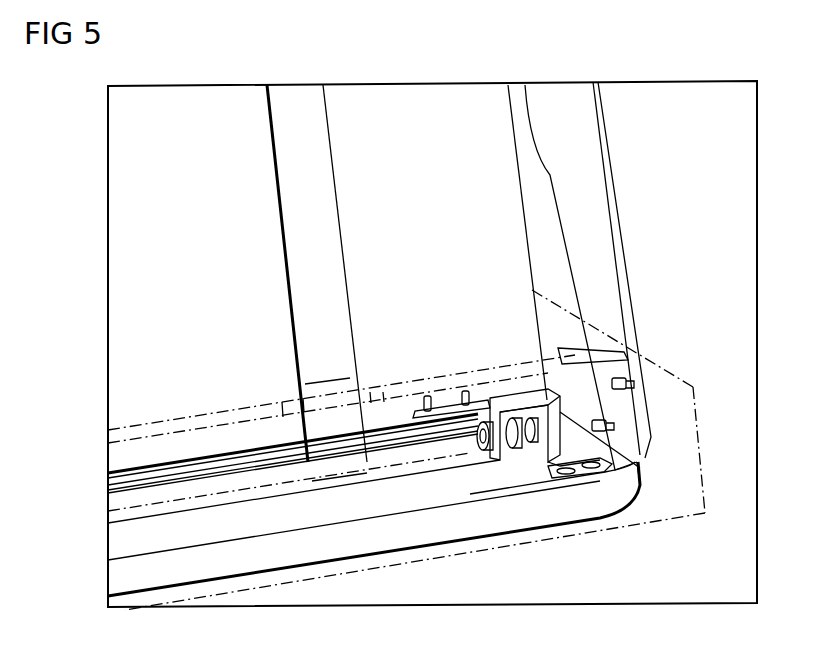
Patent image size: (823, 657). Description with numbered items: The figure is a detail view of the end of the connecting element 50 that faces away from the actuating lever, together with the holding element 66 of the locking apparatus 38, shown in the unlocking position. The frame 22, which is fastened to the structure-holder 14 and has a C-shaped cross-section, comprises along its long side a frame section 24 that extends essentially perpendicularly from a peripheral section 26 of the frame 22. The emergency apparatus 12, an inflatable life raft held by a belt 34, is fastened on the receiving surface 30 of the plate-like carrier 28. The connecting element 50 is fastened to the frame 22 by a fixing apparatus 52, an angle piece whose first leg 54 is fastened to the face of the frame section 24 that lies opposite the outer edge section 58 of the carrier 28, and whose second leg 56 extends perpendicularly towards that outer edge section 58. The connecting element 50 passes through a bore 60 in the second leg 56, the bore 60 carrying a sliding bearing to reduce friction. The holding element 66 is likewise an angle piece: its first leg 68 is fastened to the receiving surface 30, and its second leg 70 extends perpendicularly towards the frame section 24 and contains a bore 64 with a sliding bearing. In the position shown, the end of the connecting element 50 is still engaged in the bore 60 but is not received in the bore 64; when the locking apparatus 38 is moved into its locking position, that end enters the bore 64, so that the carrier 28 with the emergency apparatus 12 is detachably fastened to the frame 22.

The emergency apparatus 12 is at (204, 205).
The structure-holder 14 is at (593, 201).
The frame 22 is at (695, 381).
The frame section 24 is at (125, 458).
The peripheral section 26 is at (680, 451).
The carrier 28 is at (131, 595).
The receiving surface 30 is at (125, 537).
The belt 34 is at (321, 186).
The locking apparatus 38 is at (93, 505).
The connecting element 50 is at (257, 478).
The fixing apparatus 52 is at (422, 389).
The first leg 54 is at (446, 410).
The second leg 56 is at (489, 457).
The outer edge section 58 is at (238, 527).
The bore 60 is at (475, 450).
The bore 64 is at (505, 425).
The holding element 66 is at (604, 473).
The first leg 68 is at (562, 470).
The second leg 70 is at (514, 410).